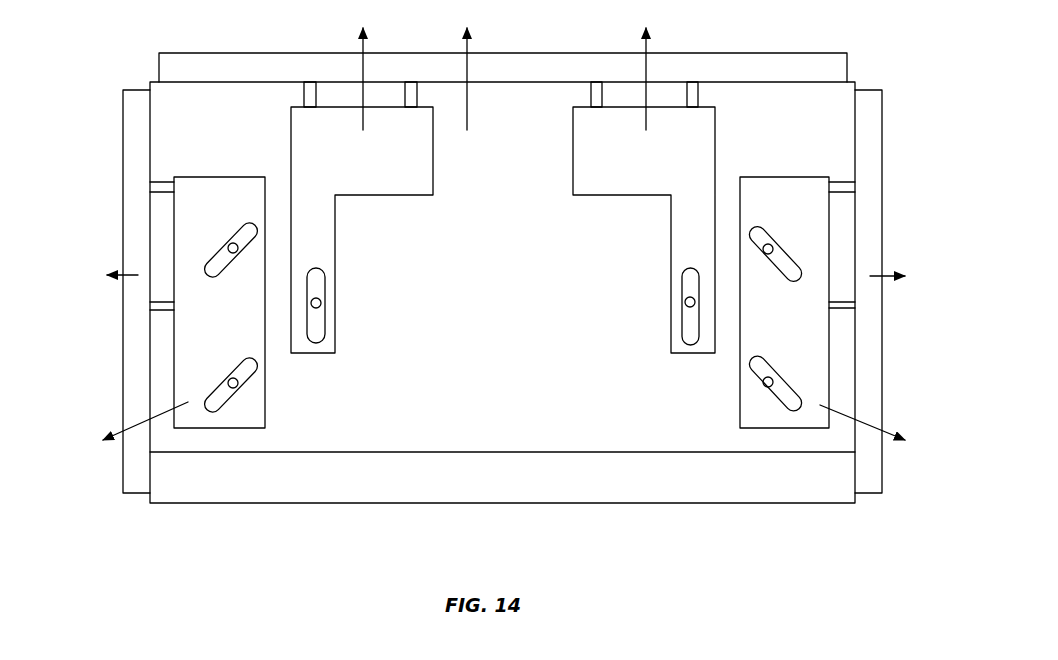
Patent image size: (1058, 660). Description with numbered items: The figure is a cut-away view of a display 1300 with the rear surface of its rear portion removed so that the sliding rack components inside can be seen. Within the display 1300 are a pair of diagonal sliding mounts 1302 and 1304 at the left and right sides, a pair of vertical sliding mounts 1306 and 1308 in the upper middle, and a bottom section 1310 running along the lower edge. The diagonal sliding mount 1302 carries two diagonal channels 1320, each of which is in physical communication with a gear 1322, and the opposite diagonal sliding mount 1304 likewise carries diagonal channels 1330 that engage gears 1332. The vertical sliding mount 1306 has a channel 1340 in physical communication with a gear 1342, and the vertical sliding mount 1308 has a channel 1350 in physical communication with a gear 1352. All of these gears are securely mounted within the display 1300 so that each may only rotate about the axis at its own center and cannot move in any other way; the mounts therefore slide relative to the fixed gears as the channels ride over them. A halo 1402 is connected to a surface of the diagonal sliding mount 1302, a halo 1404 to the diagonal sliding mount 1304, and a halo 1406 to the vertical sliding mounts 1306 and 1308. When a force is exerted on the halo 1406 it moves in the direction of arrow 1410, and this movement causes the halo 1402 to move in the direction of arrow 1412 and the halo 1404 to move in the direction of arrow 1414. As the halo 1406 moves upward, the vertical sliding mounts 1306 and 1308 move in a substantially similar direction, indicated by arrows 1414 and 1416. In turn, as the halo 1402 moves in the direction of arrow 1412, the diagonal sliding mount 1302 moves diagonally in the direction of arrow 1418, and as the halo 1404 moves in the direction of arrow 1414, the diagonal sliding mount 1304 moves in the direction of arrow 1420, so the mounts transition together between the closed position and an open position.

The display 1300 is at (502, 326).
The diagonal sliding mount 1302 is at (186, 210).
The diagonal sliding mount 1304 is at (803, 187).
The vertical sliding mount 1306 is at (318, 125).
The vertical sliding mount 1308 is at (693, 123).
The bottom section 1310 is at (502, 471).
The diagonal channels 1320 is at (253, 228).
The gears 1322 is at (229, 248).
The diagonal channels 1330 is at (757, 228).
The gears 1332 is at (772, 250).
The channel 1340 is at (318, 340).
The gear 1342 is at (317, 307).
The channel 1350 is at (688, 342).
The gear 1352 is at (689, 305).
The halo 1402 is at (140, 473).
The halo 1404 is at (872, 468).
The halo 1406 is at (523, 67).
The arrow 1410 is at (469, 68).
The arrow 1412 is at (95, 278).
The arrow 1414 is at (652, 148).
The arrow 1416 is at (649, 68).
The arrow 1418 is at (124, 438).
The arrow 1420 is at (890, 439).